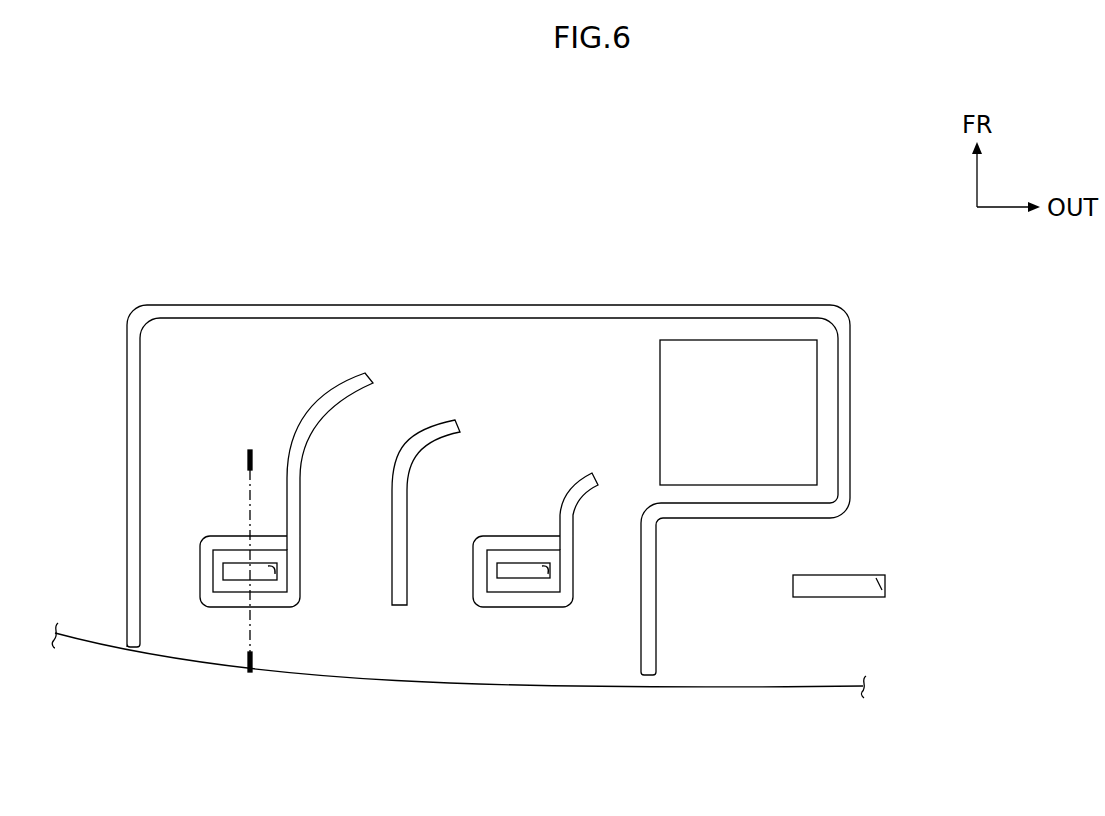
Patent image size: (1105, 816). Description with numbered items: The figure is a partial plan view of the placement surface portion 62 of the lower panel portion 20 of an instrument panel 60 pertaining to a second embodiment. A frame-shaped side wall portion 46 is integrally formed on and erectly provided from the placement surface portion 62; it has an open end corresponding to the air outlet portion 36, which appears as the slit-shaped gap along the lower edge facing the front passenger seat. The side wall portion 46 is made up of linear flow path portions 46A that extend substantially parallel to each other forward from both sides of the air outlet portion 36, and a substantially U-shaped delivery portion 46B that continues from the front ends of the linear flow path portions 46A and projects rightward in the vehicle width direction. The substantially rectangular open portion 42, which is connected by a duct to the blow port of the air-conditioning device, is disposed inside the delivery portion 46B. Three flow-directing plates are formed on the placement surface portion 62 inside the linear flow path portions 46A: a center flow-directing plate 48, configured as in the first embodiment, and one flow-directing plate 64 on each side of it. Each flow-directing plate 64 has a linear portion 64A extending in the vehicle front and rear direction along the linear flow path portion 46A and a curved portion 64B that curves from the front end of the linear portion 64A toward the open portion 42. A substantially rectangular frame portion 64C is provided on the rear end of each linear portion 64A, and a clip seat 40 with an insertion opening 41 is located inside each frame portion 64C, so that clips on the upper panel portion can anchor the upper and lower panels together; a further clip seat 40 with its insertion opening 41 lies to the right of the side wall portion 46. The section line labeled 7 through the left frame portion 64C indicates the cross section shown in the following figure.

The side wall portion 46 is at (556, 294).
The linear flow path portion 46A is at (127, 517).
The delivery portion 46B is at (852, 352).
The open portion 42 is at (774, 342).
The flow-directing plate 64 is at (397, 471).
The linear portion 64A is at (306, 482).
The curved portion 64B is at (337, 392).
The frame portion 64C is at (210, 540).
The flow-directing plate 48 is at (427, 432).
The clip seat 40 is at (239, 584).
The insertion opening 41 is at (276, 576).
The section line VII 7 is at (260, 460).
The air outlet portion 36 is at (433, 684).
The instrument panel 60 is at (174, 678).
The placement surface portion 62 is at (761, 694).
The lower panel portion 20 is at (713, 655).